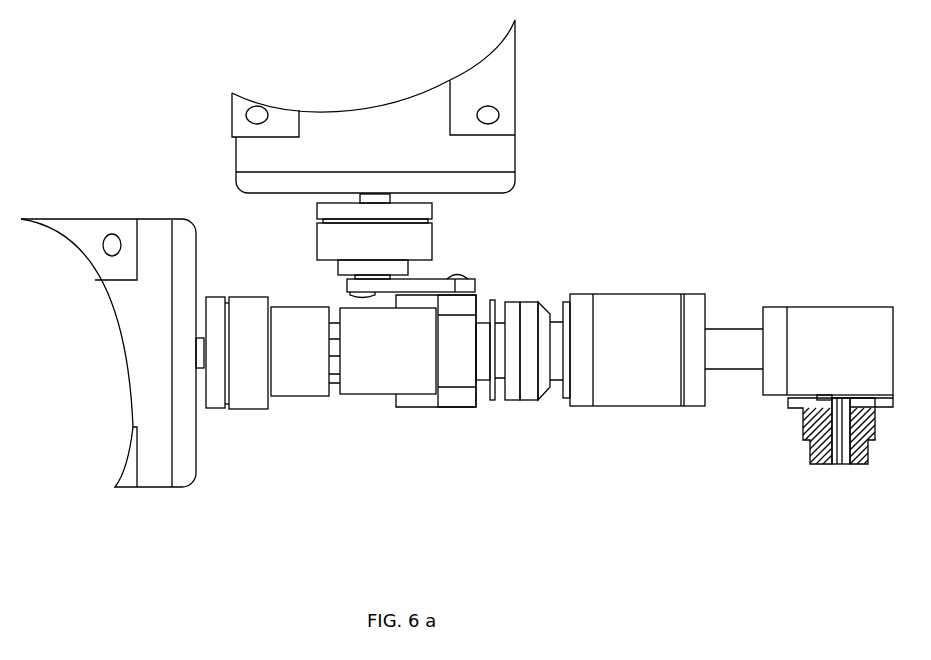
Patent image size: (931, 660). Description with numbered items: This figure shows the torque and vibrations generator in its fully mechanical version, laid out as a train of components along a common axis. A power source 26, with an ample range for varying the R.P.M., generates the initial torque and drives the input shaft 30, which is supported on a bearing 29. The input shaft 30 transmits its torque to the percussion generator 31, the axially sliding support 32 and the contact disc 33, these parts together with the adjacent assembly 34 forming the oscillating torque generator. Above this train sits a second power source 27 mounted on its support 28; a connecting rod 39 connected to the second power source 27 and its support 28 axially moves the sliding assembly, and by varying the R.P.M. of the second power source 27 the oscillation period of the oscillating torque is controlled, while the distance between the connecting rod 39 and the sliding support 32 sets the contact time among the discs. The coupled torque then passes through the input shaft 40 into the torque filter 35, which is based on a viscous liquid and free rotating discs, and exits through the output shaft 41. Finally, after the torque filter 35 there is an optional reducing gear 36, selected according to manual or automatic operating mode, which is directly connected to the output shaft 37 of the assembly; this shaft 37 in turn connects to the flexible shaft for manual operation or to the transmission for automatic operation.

The power source 26 is at (158, 437).
The second power source 27 is at (458, 150).
The support 28 is at (357, 242).
The bearing 29 is at (243, 393).
The input shaft 30 is at (297, 370).
The percussion generator 31 is at (366, 374).
The axially sliding support 32 is at (458, 395).
The contact disc 33 is at (514, 383).
The oscillating torque generator assembly 34 is at (530, 383).
The torque filter 35 is at (657, 387).
The reducing gear 36 is at (803, 331).
The output shaft of the assembly 37 is at (838, 462).
The connecting rod 39 is at (445, 285).
The input shaft 40 is at (558, 357).
The output shaft 41 is at (732, 355).